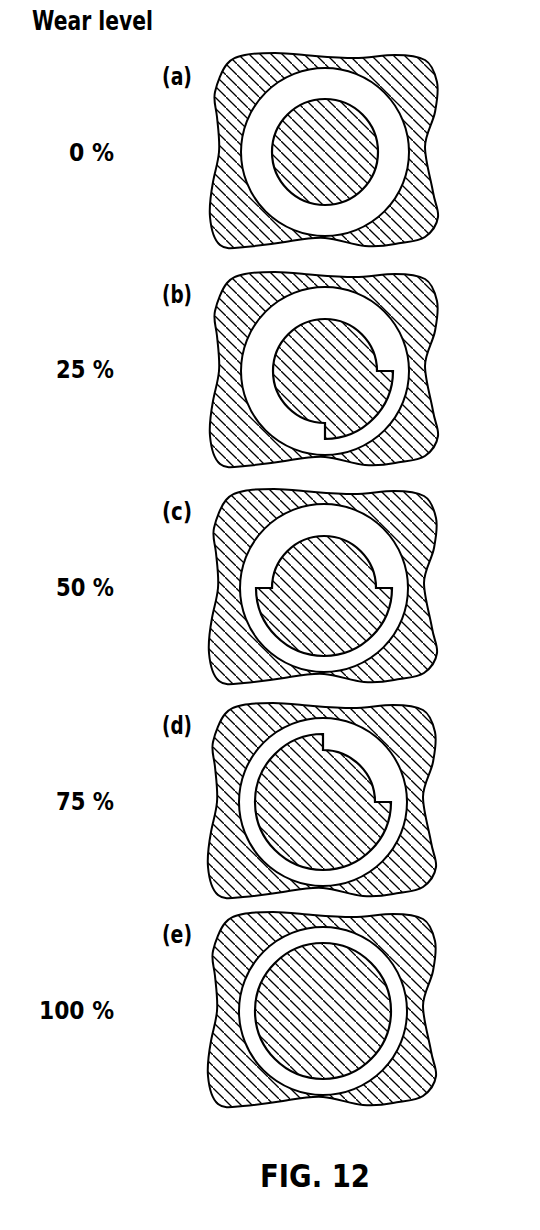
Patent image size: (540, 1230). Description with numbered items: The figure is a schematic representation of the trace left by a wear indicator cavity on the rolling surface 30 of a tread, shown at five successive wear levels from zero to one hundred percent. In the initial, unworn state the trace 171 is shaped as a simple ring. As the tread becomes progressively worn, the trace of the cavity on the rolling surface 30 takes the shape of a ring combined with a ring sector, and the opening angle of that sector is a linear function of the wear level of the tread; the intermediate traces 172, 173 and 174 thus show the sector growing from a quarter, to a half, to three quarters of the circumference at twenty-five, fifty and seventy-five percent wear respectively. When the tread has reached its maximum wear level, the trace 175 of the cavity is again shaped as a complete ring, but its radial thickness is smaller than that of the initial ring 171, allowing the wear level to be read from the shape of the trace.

The rolling surface 30 is at (417, 218).
The trace 171 is at (390, 128).
The wear indicator at 25% wear 172 is at (387, 342).
The wear indicator at 50% wear 173 is at (382, 560).
The wear indicator at 75% wear 174 is at (390, 782).
The trace 175 is at (400, 1002).